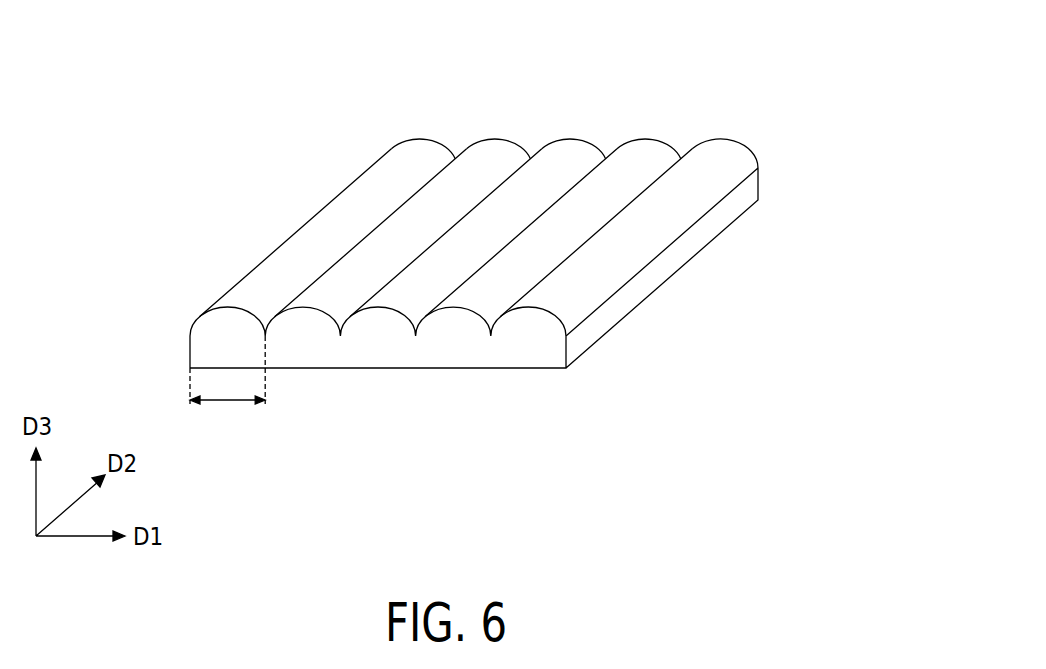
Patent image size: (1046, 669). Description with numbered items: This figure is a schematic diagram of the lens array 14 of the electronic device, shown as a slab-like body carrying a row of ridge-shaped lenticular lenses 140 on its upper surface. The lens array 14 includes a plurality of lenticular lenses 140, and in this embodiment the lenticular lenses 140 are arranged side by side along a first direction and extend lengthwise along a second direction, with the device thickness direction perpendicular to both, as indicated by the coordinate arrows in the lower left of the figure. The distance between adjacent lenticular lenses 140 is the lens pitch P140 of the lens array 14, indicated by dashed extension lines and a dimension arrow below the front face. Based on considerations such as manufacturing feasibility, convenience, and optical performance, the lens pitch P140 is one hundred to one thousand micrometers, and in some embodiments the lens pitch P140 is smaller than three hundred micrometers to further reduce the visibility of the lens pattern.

The lens array 14 is at (546, 193).
The lenticular lenses 140 is at (720, 160).
The lens pitch P140 is at (227, 390).